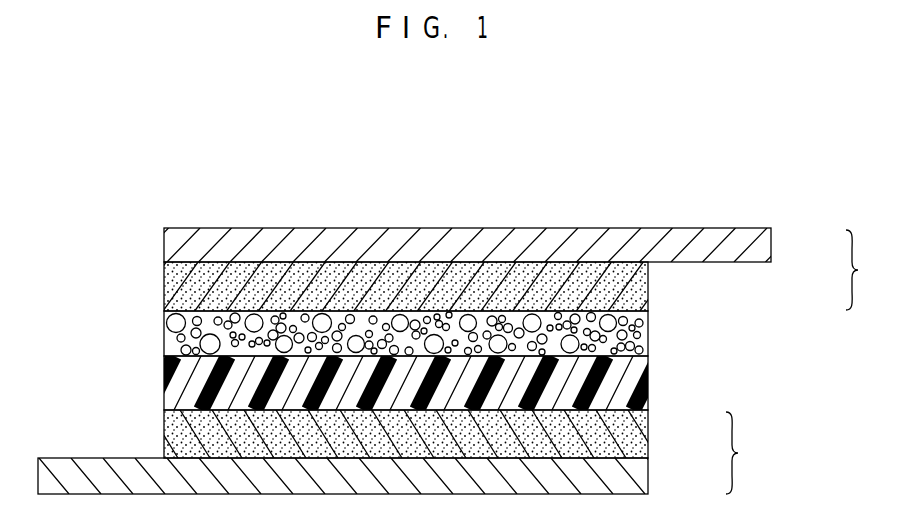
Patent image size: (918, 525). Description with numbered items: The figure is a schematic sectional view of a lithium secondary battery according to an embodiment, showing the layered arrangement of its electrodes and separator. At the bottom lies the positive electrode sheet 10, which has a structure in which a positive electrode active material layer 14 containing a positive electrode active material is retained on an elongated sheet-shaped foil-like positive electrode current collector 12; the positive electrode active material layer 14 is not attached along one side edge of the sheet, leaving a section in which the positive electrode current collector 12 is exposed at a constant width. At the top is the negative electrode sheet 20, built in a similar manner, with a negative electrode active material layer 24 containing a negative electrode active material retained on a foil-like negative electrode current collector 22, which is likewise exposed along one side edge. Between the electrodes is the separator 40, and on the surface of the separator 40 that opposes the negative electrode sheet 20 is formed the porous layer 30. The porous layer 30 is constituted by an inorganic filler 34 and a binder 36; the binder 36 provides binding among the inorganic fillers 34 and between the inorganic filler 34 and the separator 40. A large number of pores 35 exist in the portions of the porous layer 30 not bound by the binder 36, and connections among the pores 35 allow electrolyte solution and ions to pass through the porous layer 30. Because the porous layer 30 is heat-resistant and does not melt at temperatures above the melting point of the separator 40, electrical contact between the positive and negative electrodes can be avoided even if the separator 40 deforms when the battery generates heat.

The positive electrode sheet 10 is at (386, 453).
The positive electrode current collector 12 is at (640, 475).
The positive electrode active material layer 14 is at (648, 428).
The negative electrode sheet 20 is at (511, 269).
The negative electrode current collector 22 is at (759, 249).
The negative electrode active material layer 24 is at (649, 287).
The porous layer 30 is at (446, 274).
The inorganic filler 34 is at (218, 317).
The pores 35 is at (281, 323).
The binder 36 is at (343, 323).
The separator 40 is at (640, 383).